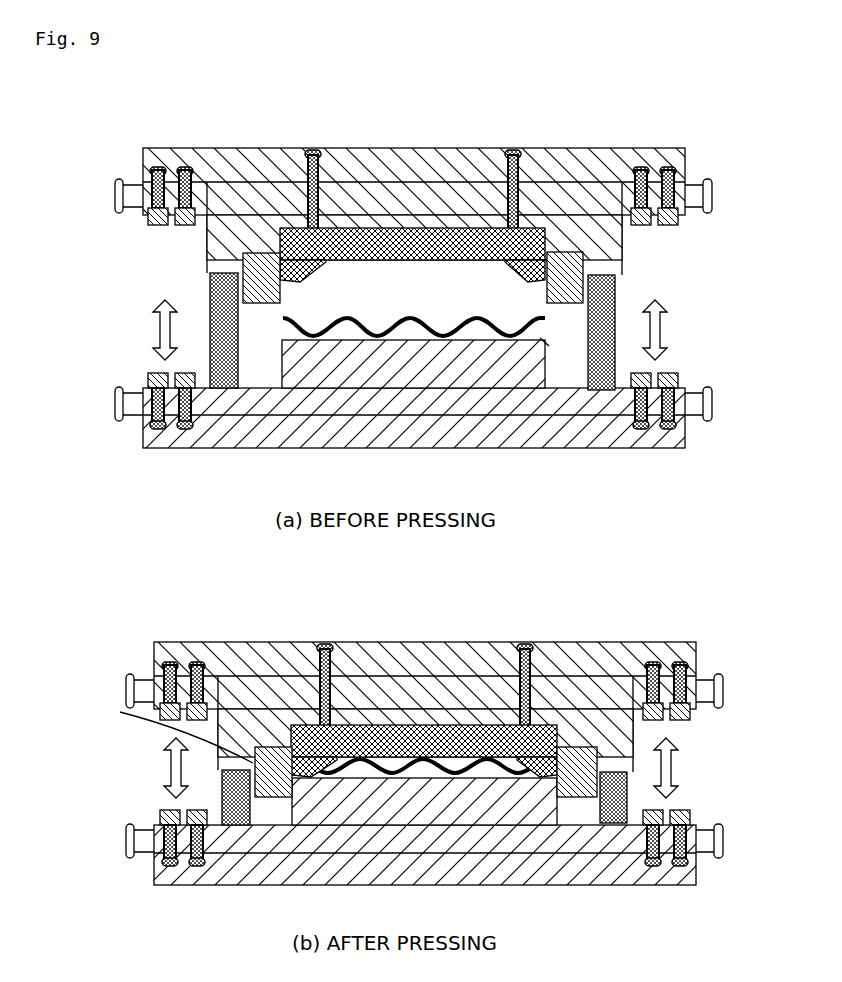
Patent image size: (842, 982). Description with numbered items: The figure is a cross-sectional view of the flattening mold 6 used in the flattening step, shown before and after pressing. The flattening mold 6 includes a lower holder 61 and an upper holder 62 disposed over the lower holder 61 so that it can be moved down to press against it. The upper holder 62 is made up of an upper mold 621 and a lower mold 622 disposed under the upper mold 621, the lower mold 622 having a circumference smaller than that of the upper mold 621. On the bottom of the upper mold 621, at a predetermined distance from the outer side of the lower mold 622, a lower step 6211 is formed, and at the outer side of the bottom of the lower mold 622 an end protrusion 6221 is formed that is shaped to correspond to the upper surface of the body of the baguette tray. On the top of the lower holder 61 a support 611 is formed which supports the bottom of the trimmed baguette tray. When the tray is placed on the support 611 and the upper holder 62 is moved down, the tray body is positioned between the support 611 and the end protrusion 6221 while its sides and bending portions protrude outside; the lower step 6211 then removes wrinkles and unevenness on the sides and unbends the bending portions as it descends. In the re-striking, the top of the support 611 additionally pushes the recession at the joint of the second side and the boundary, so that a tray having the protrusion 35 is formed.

The flattening mold 6 is at (275, 137).
The protrusion 35 is at (283, 319).
The lower holder 61 is at (437, 377).
The support 611 is at (547, 340).
The upper holder 62 is at (519, 499).
The upper mold 621 is at (585, 233).
The lower mold 622 is at (590, 257).
The lower step 6211 is at (617, 292).
The end protrusion 6221 is at (210, 257).